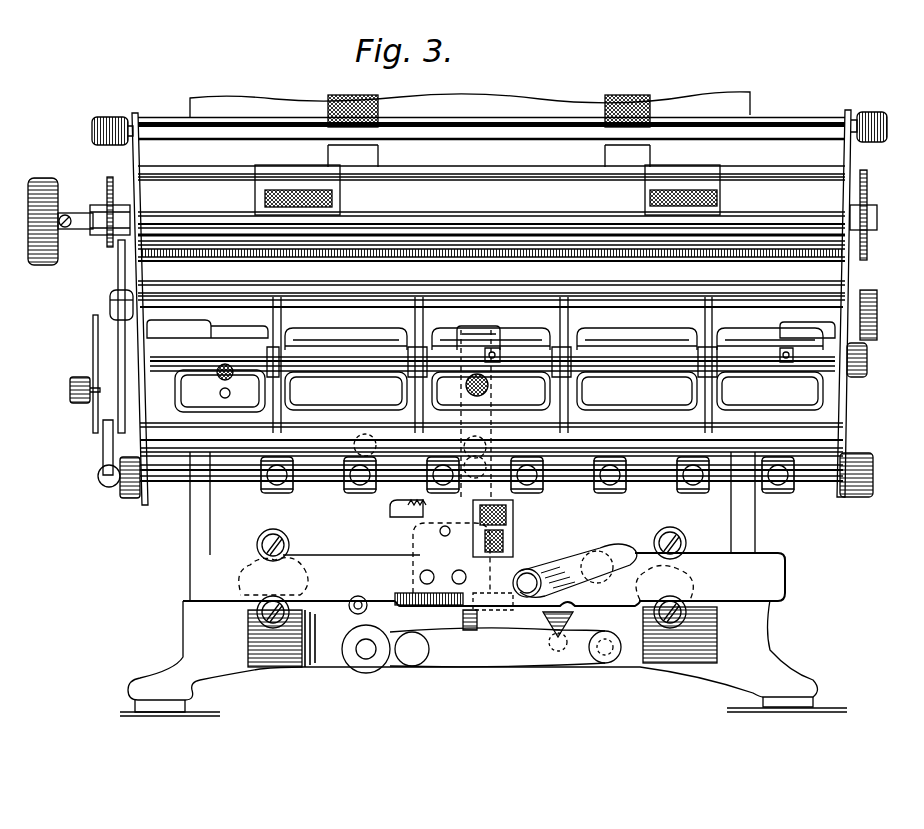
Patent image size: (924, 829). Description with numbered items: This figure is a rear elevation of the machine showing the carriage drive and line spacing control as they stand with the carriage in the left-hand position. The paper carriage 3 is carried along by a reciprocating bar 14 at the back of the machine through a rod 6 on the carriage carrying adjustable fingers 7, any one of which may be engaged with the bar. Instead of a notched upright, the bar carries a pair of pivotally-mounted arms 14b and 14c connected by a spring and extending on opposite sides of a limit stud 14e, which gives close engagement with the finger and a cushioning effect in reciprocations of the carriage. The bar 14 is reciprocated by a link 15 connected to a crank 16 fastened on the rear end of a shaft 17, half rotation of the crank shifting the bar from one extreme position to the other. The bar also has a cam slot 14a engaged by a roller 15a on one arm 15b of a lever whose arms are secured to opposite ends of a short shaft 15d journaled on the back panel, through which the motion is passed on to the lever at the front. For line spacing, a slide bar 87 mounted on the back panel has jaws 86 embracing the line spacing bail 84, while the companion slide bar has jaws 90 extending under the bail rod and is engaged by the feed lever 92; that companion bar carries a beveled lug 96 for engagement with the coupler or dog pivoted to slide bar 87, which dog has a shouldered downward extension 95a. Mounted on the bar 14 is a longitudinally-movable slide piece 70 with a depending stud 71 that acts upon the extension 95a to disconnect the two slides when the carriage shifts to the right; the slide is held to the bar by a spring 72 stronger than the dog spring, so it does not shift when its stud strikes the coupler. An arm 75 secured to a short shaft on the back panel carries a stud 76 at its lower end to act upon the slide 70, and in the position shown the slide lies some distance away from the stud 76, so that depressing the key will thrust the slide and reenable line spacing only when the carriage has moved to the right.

The paper carriage 3 is at (840, 403).
The rod 6 is at (830, 465).
The adjustable fingers 7 is at (782, 488).
The reciprocating bar 14 is at (364, 559).
The cam slot 14a is at (353, 486).
The pivotally-mounted arm 14b is at (410, 518).
The pivotally-mounted arm 14c is at (490, 483).
The limit stud 14e is at (440, 536).
The link 15 is at (527, 655).
The roller 15a is at (530, 576).
The lever arm 15b is at (585, 560).
The short shaft 15d is at (666, 581).
The crank 16 is at (405, 665).
The shaft 17 is at (364, 654).
The slide piece 70 is at (605, 665).
The stud 71 is at (563, 655).
The spring 72 is at (437, 612).
The arm 75 is at (360, 530).
The stud 76 is at (353, 608).
The line spacing bail 84 is at (612, 370).
The jaws 86 is at (462, 328).
The slide bar 87 is at (470, 396).
The jaws 90 is at (493, 366).
The feed lever 92 is at (522, 512).
The downward extension 95a is at (471, 632).
The beveled lug 96 is at (514, 580).